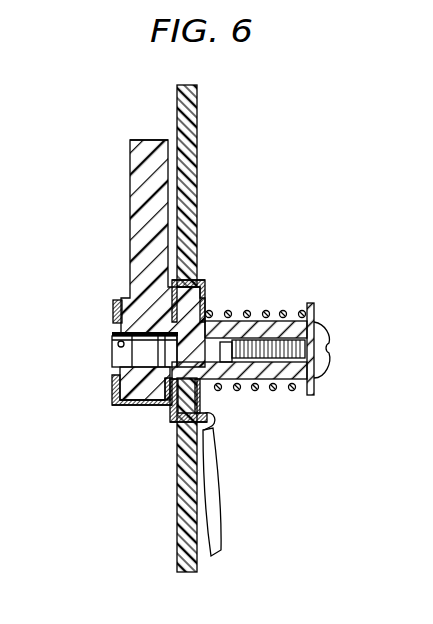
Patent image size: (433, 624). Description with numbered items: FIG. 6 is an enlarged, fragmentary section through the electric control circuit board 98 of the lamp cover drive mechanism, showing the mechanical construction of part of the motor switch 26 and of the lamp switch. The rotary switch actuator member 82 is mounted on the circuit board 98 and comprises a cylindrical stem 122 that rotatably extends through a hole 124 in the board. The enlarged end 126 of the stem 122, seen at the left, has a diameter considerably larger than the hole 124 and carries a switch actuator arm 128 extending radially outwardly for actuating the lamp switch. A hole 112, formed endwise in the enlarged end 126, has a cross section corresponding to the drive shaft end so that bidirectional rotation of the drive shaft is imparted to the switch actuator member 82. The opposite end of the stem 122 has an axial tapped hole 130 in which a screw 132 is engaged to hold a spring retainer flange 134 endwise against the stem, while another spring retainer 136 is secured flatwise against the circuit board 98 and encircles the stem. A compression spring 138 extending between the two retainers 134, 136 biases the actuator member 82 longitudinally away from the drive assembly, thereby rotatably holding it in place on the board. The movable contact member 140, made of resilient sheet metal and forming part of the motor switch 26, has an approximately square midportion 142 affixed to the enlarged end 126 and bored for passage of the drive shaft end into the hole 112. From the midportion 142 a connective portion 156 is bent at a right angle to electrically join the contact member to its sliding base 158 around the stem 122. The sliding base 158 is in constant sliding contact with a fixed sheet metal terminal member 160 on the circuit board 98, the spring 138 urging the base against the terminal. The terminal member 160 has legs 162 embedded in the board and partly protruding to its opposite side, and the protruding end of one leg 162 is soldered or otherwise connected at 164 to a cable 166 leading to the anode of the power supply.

The motor switch 26 is at (104, 274).
The rotary switch actuator member 82 is at (144, 136).
The circuit board 98 is at (198, 125).
The hole 112 is at (119, 341).
The stem 122 is at (286, 396).
The hole 124 is at (215, 402).
The enlarged end 126 is at (125, 393).
The switch actuator arm 128 is at (131, 178).
The tapped hole 130 is at (283, 345).
The screw 132 is at (328, 330).
The spring retainer flange 134 is at (314, 305).
The spring retainer 136 is at (207, 300).
The compression spring 138 is at (268, 310).
The movable contact member 140 is at (140, 407).
The midportion 142 is at (116, 378).
The connective portion 156 is at (148, 410).
The sliding base 158 is at (118, 405).
The fixed terminal member 160 is at (172, 416).
The legs 162 is at (203, 282).
The connection 164 is at (222, 432).
The cable 166 is at (222, 548).